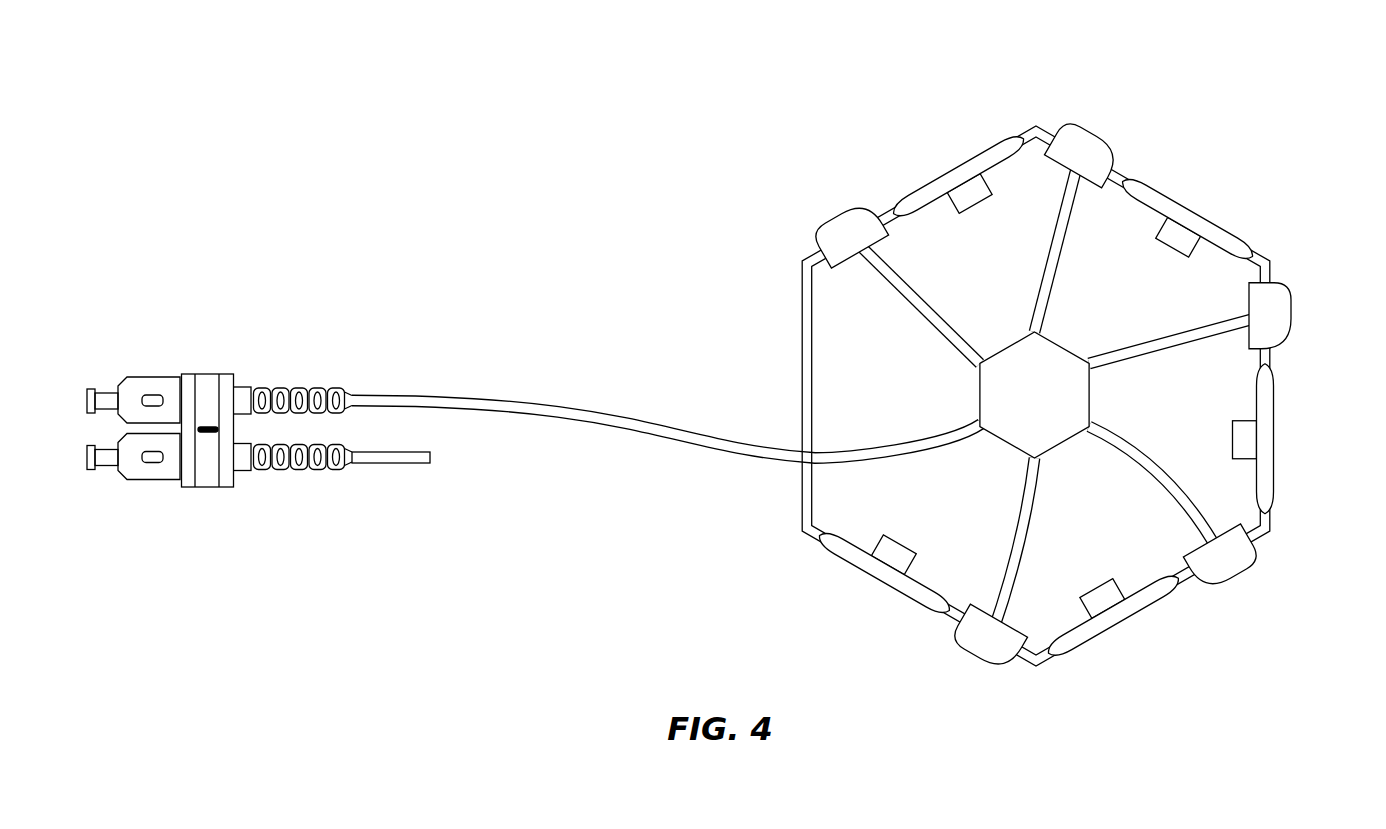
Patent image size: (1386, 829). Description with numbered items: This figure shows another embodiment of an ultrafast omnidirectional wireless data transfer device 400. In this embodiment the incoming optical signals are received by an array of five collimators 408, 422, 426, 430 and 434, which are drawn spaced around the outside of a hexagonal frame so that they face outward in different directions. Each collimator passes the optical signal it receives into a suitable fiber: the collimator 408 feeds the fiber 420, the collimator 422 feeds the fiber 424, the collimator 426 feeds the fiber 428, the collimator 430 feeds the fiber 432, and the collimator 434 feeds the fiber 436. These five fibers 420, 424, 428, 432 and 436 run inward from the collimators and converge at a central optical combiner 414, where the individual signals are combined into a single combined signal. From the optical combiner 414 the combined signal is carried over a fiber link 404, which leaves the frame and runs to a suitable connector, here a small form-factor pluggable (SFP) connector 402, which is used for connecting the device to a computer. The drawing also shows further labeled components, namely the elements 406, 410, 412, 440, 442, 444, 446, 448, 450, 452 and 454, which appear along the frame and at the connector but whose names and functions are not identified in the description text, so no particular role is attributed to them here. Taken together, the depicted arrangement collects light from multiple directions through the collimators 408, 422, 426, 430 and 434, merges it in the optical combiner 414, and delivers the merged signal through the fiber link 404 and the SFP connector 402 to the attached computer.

The ultrafast omnidirectional wireless data transfer device 400 is at (806, 79).
The small form-factor pluggable (SFP) connector 402 is at (205, 375).
The fiber link 404 is at (385, 396).
The second optical fiber cable 406 is at (395, 463).
The collimator 408 is at (1090, 125).
The first cable segment 410 is at (1195, 212).
The first splice 412 is at (1197, 243).
The optical combiner 414 is at (1066, 452).
The fiber 420 is at (1063, 222).
The collimator 422 is at (1293, 305).
The fiber 424 is at (1107, 355).
The collimator 426 is at (1232, 583).
The fiber 428 is at (1140, 472).
The collimator 430 is at (972, 665).
The fiber 432 is at (1010, 552).
The collimator 434 is at (843, 212).
The fiber 436 is at (920, 327).
The second cable segment 440 is at (1280, 470).
The second splice 442 is at (1240, 418).
The third cable segment 444 is at (1120, 630).
The third splice 446 is at (1112, 578).
The fourth cable segment 448 is at (863, 575).
The fourth splice 450 is at (878, 540).
The fifth cable segment 452 is at (953, 170).
The fifth splice 454 is at (985, 212).